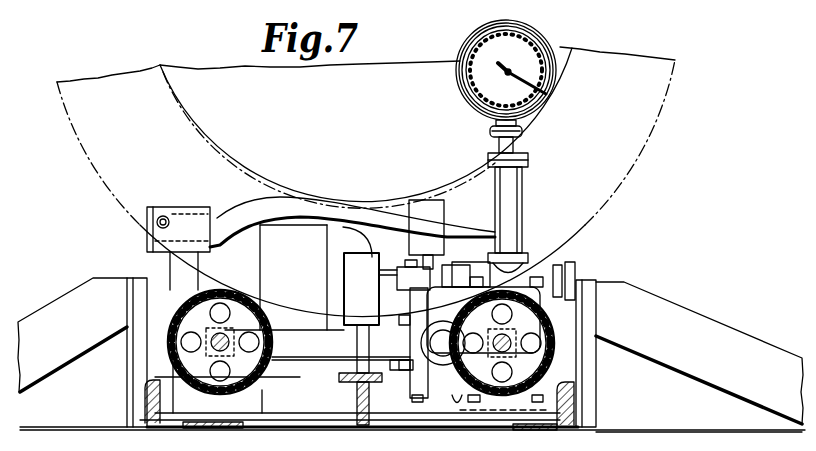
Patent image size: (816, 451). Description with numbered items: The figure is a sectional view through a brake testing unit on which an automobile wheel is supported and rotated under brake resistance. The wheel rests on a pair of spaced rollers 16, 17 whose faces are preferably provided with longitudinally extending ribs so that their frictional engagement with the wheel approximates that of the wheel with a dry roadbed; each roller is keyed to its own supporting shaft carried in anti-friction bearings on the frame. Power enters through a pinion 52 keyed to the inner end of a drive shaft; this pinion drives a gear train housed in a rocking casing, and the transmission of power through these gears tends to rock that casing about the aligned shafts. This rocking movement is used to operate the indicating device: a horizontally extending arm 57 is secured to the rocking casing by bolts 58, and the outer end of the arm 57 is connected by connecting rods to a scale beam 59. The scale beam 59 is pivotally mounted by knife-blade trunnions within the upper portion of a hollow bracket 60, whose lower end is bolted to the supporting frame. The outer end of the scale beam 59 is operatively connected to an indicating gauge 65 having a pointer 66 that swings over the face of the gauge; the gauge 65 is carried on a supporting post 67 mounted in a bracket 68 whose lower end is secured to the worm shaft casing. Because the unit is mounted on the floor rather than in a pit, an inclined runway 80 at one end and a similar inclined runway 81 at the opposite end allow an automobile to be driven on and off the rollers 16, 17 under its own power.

The roller 16 is at (537, 278).
The roller 17 is at (262, 315).
The pinion 52 is at (439, 388).
The horizontally extending arm 57 is at (322, 350).
The bolts 58 is at (429, 342).
The scale beam 59 is at (333, 207).
The hollow bracket 60 is at (173, 267).
The indicating gauge 65 is at (482, 95).
The pointer 66 is at (546, 79).
The supporting post 67 is at (530, 138).
The bracket 68 is at (513, 195).
The inclined runway 80 is at (72, 358).
The inclined runway 81 is at (684, 368).